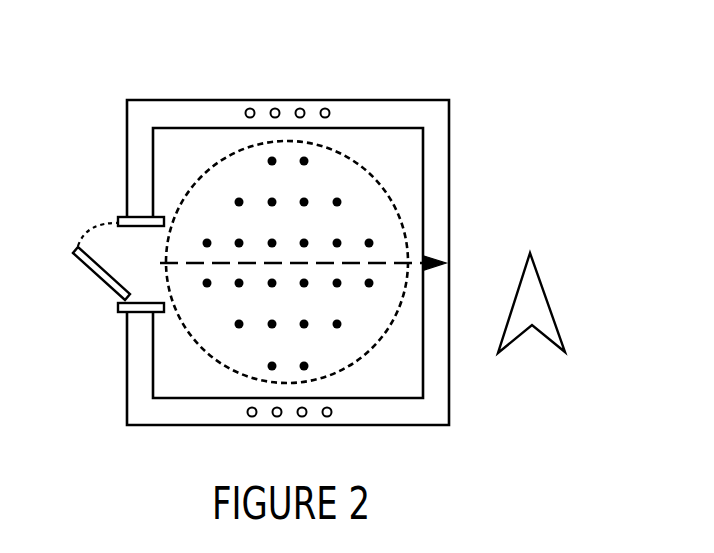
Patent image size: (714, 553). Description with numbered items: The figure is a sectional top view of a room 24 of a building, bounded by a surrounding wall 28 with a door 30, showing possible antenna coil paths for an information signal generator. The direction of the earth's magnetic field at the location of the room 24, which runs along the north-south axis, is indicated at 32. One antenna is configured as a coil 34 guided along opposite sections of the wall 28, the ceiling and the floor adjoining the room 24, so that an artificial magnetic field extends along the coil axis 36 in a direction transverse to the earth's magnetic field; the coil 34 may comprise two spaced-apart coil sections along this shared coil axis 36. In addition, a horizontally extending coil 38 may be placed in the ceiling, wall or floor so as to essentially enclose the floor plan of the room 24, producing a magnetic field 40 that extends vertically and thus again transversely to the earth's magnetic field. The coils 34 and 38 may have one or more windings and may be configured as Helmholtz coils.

The room 24 is at (410, 144).
The surrounding wall 28 is at (410, 116).
The door 30 is at (96, 278).
The direction of the earth's magnetic field 32 is at (546, 290).
The coil 34 is at (248, 107).
The coil axis 36 is at (412, 268).
The horizontally extending coil 38 is at (200, 186).
The magnetic field 40 is at (340, 204).